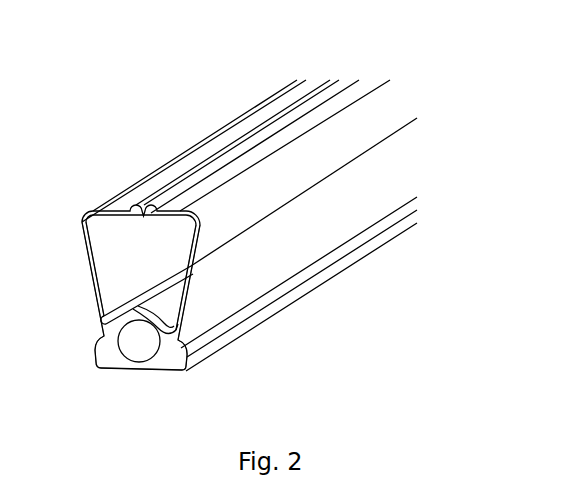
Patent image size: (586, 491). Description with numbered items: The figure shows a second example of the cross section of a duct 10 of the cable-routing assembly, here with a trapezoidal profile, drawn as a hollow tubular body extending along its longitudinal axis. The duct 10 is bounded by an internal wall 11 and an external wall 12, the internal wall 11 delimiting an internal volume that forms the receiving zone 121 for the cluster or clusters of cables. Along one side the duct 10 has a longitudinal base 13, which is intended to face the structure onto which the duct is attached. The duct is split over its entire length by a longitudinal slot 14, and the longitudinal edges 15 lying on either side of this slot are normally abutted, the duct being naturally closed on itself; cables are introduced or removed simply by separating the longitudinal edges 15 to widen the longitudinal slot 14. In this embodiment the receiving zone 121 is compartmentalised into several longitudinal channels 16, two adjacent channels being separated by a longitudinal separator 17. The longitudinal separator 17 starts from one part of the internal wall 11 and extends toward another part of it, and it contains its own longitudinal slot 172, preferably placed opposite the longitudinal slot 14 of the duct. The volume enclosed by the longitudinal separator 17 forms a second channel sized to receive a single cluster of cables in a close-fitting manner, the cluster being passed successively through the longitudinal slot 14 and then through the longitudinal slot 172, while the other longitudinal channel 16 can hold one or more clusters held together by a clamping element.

The duct 10 is at (215, 220).
The internal wall 11 is at (107, 300).
The external wall 12 is at (322, 226).
The receiving zone 121 is at (104, 258).
The longitudinal base 13 is at (106, 369).
The longitudinal slot 14 is at (215, 183).
The longitudinal edges 15 is at (195, 180).
The longitudinal channels 16 is at (139, 345).
The longitudinal separator 17 is at (160, 322).
The longitudinal slot 172 is at (178, 294).